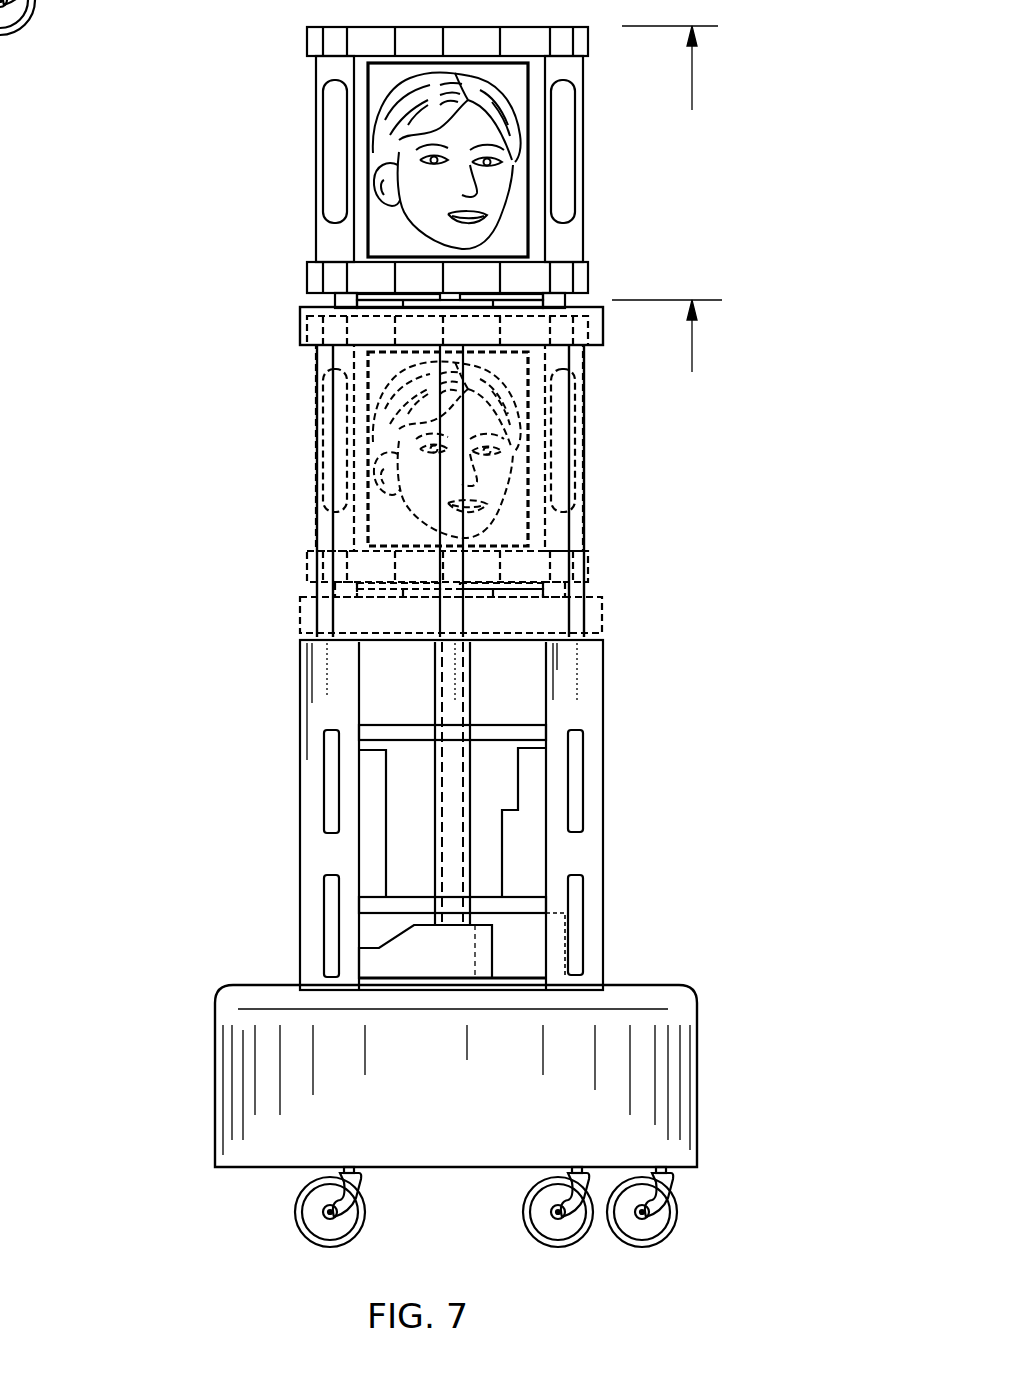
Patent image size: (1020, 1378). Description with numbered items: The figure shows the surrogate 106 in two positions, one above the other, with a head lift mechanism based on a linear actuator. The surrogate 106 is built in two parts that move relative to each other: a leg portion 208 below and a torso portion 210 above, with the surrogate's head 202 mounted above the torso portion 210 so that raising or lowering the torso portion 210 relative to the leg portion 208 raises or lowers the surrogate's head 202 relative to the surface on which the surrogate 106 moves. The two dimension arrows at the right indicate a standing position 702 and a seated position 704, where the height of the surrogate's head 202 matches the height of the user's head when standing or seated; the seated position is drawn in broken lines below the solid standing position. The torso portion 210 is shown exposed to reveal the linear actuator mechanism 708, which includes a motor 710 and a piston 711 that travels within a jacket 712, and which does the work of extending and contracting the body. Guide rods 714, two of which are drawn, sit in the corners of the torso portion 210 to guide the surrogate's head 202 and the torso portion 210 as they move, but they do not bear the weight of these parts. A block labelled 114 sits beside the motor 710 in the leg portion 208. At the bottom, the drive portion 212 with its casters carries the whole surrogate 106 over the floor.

The surrogate 106 is at (174, 355).
The surrogate's head 202 is at (305, 47).
The torso portion 210 is at (596, 345).
The guide rods 714 is at (317, 512).
The piston 711 is at (437, 520).
The linear actuator mechanism 708 is at (261, 612).
The jacket 712 is at (435, 680).
The leg portion 208 is at (610, 853).
The motor 710 is at (458, 961).
The controller 114 is at (542, 959).
The drive portion 212 is at (237, 1123).
The standing position 702 is at (670, 87).
The seated position 704 is at (667, 355).